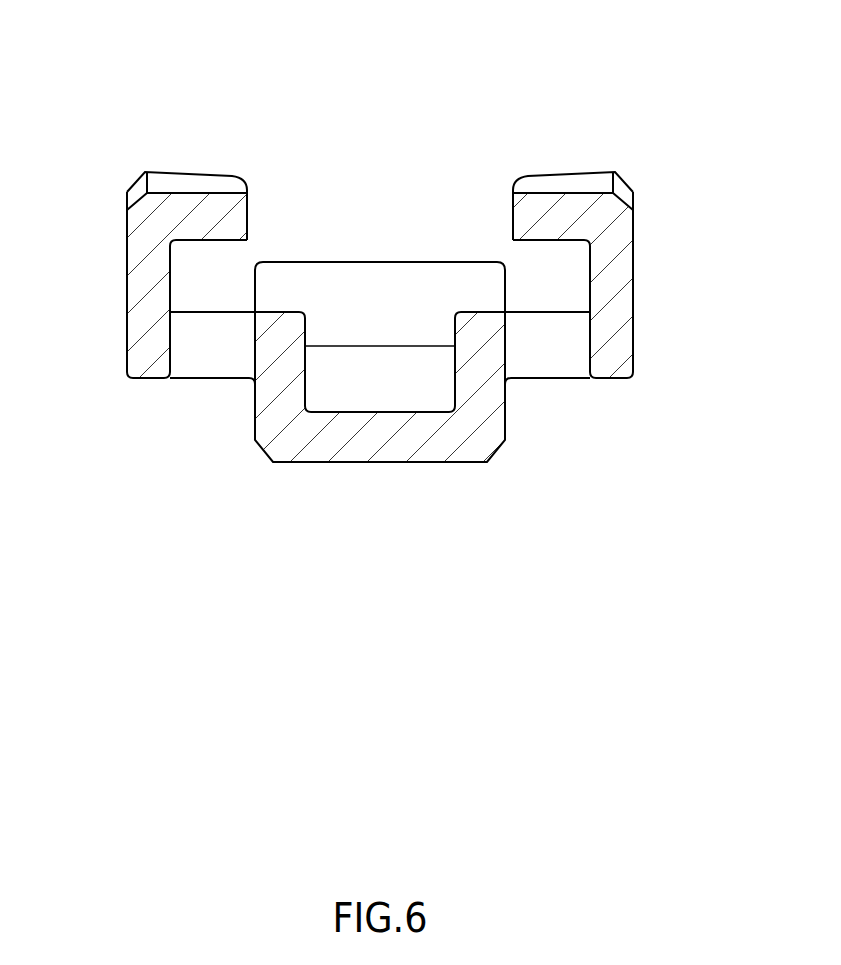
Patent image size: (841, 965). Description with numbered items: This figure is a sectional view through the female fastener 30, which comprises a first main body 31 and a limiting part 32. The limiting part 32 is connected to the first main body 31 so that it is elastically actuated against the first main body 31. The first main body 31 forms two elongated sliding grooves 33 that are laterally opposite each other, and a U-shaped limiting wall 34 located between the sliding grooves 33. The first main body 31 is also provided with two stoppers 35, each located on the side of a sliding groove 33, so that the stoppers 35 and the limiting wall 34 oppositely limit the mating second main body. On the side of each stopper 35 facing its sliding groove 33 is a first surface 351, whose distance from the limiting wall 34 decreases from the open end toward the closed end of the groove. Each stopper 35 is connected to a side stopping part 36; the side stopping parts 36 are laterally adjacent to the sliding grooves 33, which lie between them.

The female fastener 30 is at (591, 109).
The first main body 31 is at (380, 462).
The limiting part 32 is at (378, 262).
The sliding groove 33 is at (218, 275).
The limiting wall 34 is at (275, 312).
The stopper 35 is at (205, 193).
The side stopping part 36 is at (127, 292).
The first surface 351 is at (202, 243).